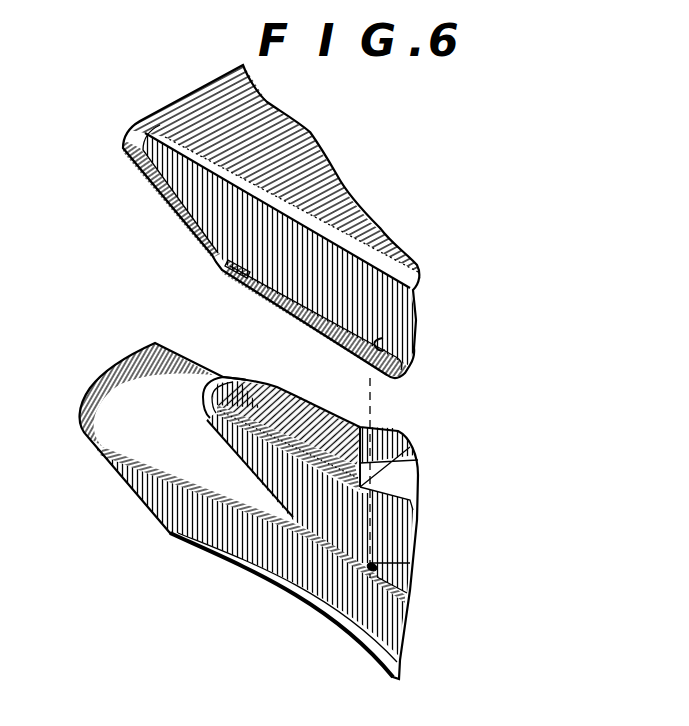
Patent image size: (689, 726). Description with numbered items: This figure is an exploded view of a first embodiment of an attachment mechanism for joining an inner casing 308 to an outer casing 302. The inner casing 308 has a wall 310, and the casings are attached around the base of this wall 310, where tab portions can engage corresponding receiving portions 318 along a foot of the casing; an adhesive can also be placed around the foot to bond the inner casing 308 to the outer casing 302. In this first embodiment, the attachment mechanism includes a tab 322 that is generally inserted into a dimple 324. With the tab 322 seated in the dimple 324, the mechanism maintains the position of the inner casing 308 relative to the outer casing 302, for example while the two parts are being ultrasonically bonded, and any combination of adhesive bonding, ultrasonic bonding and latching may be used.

The outer casing 302 is at (220, 537).
The inner casing 308 is at (268, 142).
The wall 310 is at (395, 537).
The receiving portion 318 is at (224, 277).
The tab 322 is at (373, 563).
The dimple 324 is at (383, 346).